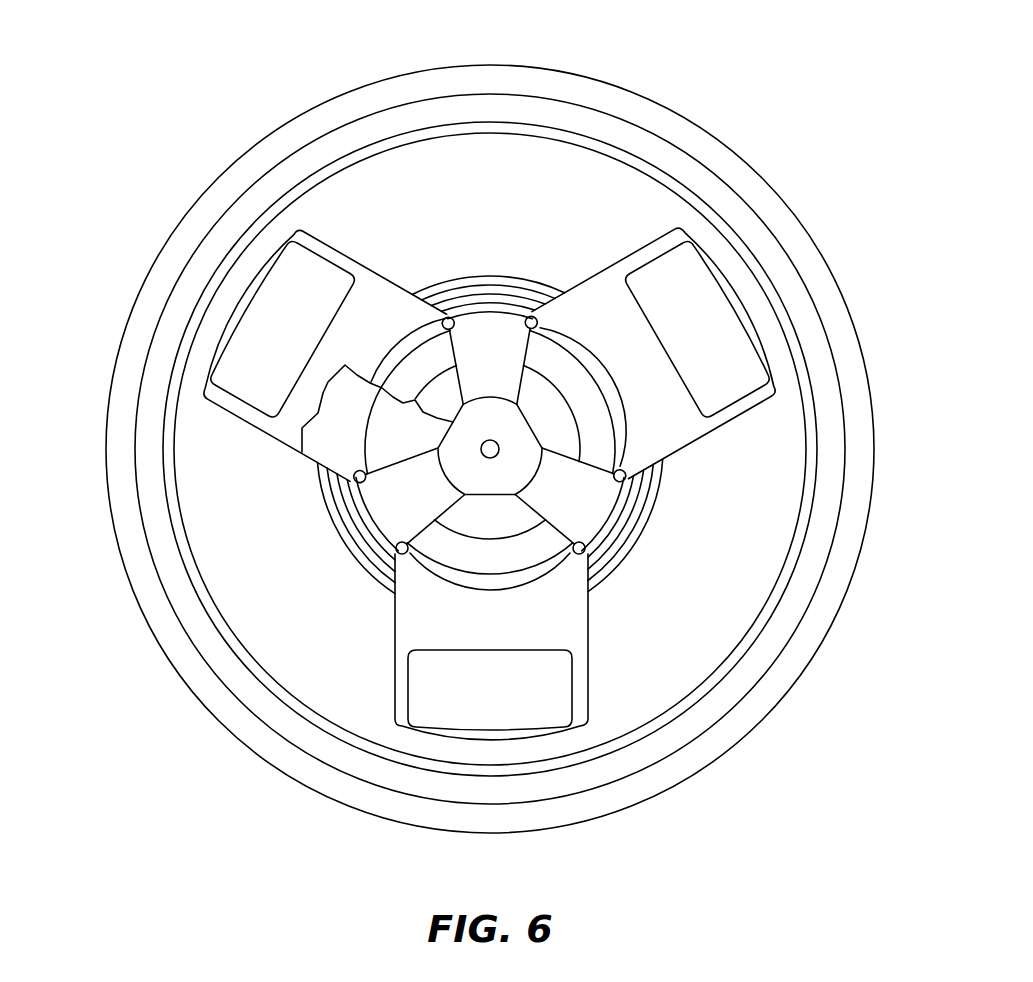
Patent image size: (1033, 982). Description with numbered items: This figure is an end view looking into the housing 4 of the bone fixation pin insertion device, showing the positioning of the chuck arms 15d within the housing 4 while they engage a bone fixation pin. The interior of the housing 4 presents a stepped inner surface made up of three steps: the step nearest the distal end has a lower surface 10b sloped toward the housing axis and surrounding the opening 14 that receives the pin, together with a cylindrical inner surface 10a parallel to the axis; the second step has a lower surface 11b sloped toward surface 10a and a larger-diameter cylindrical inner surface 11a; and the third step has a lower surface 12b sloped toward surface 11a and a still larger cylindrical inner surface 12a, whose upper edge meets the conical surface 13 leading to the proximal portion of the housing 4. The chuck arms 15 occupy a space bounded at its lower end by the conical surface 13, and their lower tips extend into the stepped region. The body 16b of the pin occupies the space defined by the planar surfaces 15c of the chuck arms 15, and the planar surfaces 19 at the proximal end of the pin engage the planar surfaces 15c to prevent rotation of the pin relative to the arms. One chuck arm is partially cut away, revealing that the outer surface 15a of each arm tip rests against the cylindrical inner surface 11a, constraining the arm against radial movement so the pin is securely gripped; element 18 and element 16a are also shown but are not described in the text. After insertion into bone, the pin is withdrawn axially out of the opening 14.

The housing 4 is at (853, 318).
The conical surface 13 is at (432, 172).
The opening 14 is at (500, 452).
The planar surfaces 19 is at (517, 407).
The spoke 18 is at (490, 393).
The chuck arms 15 is at (590, 660).
The outer surface 15a is at (332, 437).
The planar surfaces 15c is at (460, 491).
The chuck arms 15d is at (530, 715).
The arm 16a is at (517, 493).
The body of a bone fixation pin 16b is at (540, 500).
The cylindrical inner surface 12a is at (383, 561).
The lower surface 12b is at (468, 282).
The cylindrical inner surface 11a is at (392, 545).
The lower surface 11b is at (498, 302).
The cylindrical inner surface 10a is at (395, 540).
The lower surface 10b is at (495, 337).